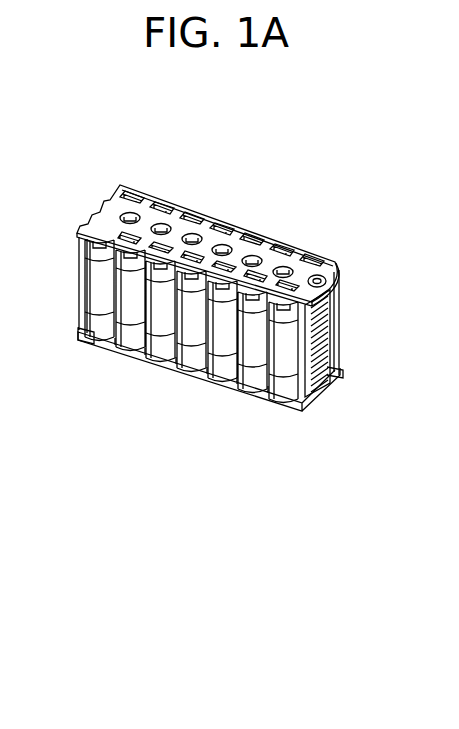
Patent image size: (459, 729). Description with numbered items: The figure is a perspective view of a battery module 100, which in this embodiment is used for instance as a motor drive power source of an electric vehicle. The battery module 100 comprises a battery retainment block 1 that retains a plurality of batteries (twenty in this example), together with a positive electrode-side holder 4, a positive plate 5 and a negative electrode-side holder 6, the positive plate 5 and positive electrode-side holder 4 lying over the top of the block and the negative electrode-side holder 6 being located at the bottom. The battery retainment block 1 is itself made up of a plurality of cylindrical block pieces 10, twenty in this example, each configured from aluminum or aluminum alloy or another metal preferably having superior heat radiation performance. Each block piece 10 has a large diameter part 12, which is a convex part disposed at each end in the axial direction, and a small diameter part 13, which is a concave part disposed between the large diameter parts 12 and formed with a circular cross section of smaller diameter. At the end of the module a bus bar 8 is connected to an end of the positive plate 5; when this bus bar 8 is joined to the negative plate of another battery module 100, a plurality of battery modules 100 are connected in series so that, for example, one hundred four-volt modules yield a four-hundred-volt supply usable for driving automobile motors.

The battery module 100 is at (321, 237).
The battery retainment block 1 is at (98, 295).
The positive electrode-side holder 4 is at (190, 207).
The positive plate 5 is at (147, 220).
The negative electrode-side holder 6 is at (282, 410).
The bus bar 8 is at (327, 327).
The block piece 10 is at (102, 333).
The large diameter part 12 is at (130, 273).
The small diameter part 13 is at (135, 310).